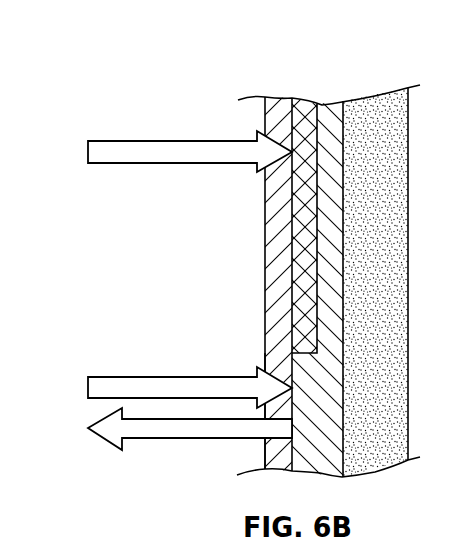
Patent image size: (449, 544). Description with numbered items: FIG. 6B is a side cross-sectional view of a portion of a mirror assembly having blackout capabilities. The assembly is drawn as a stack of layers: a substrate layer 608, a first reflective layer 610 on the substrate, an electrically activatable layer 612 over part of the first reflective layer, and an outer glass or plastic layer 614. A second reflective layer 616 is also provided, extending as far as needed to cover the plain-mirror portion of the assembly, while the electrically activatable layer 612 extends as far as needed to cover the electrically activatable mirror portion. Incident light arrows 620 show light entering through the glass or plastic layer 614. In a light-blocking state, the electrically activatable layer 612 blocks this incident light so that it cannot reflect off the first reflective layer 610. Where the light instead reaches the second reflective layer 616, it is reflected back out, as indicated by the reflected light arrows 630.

The substrate layer 608 is at (372, 108).
The first reflective layer 610 is at (330, 110).
The electrically activatable layer 612 is at (303, 105).
The glass or plastic layer 614 is at (280, 102).
The second reflective layer 616 is at (267, 367).
The incident light arrows 620 is at (87, 148).
The reflected light arrows 630 is at (105, 442).